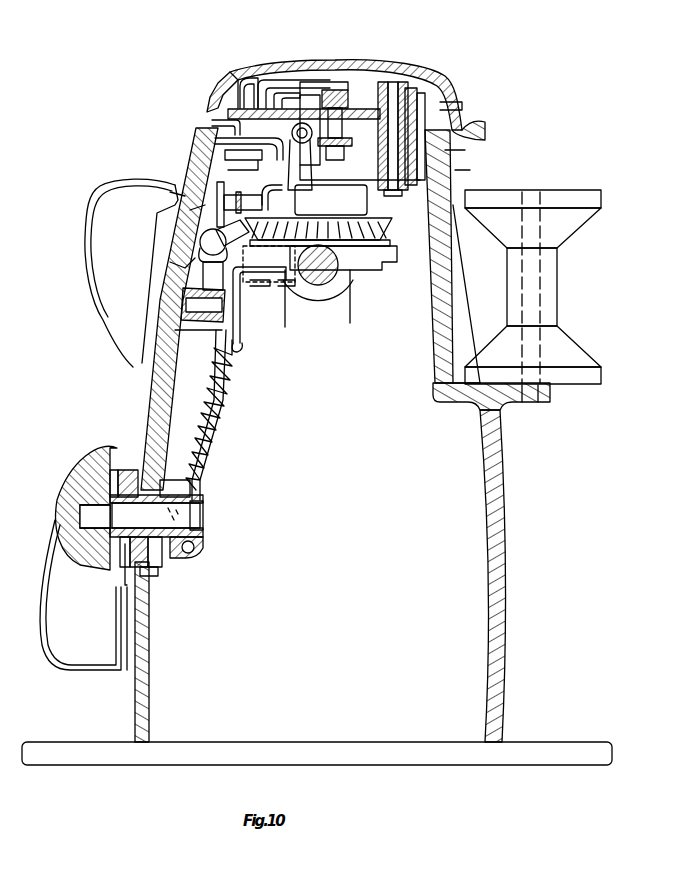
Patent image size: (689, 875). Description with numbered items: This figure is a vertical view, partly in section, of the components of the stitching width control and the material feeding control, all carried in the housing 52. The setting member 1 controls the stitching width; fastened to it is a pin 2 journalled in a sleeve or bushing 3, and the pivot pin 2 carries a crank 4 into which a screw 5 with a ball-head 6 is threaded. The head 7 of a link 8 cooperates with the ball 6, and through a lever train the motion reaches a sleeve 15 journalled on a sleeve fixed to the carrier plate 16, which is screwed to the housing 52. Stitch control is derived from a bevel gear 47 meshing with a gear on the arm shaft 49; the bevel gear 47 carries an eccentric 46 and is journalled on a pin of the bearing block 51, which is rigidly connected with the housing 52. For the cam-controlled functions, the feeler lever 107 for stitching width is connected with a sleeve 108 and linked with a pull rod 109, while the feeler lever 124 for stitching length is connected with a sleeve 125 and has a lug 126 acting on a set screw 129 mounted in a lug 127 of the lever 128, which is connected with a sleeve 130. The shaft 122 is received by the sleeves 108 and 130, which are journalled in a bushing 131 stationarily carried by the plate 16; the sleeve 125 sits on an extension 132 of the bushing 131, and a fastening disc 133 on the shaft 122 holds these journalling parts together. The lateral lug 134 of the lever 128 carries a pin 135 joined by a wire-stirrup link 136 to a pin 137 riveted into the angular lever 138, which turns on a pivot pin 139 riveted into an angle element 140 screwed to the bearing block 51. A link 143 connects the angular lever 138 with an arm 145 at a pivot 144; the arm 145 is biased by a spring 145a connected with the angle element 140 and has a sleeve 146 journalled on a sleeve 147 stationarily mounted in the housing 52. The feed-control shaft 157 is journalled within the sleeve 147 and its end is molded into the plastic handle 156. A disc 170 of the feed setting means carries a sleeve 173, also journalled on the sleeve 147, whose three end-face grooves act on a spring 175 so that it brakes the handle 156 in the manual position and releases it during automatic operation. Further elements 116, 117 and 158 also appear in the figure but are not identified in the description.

The setting member 1 is at (95, 323).
The pivot pin 2 is at (228, 303).
The sleeve or bushing 3 is at (180, 337).
The crank 4 is at (233, 285).
The screw 5 is at (205, 270).
The ball-head 6 is at (205, 255).
The head of link 7 is at (213, 242).
The link 8 is at (292, 262).
The sleeve 15 is at (313, 78).
The carrier plate 16 is at (330, 118).
The eccentric 46 is at (367, 200).
The bevel gear 47 is at (367, 227).
The arm shaft 49 is at (333, 280).
The bearing block 51 is at (382, 268).
The housing 52 is at (145, 390).
The feeler lever 107 is at (378, 78).
The sleeve 108 is at (432, 120).
The pull rod 109 is at (243, 190).
The cap 116 is at (237, 74).
The pin 117 is at (262, 72).
The shaft 122 is at (413, 74).
The feeler lever 124 is at (296, 104).
The sleeve 125 is at (436, 108).
The lug 126 is at (212, 123).
The lug 127 is at (215, 141).
The lever 128 is at (237, 193).
The set screw 129 is at (300, 144).
The sleeve 130 is at (410, 168).
The bushing 131 is at (455, 142).
The extension of bushing 132 is at (421, 97).
The fastening disc 133 is at (410, 185).
The lateral lug 134 is at (367, 242).
The pin 135 is at (258, 194).
The link 136 is at (170, 227).
The pin 137 is at (200, 210).
The angular lever 138 is at (190, 208).
The pivot pin 139 is at (240, 327).
The angle element 140 is at (288, 270).
The link 143 is at (205, 388).
The pivot joint 144 is at (205, 512).
The arm 145 is at (170, 560).
The spring 145a is at (222, 398).
The sleeve 146 is at (157, 565).
The sleeve 147 is at (132, 447).
The handle 156 is at (83, 470).
The shaft 157 is at (203, 522).
The boss 158 is at (203, 543).
The disc 170 is at (131, 673).
The sleeve 173 is at (118, 595).
The spring 175 is at (167, 483).